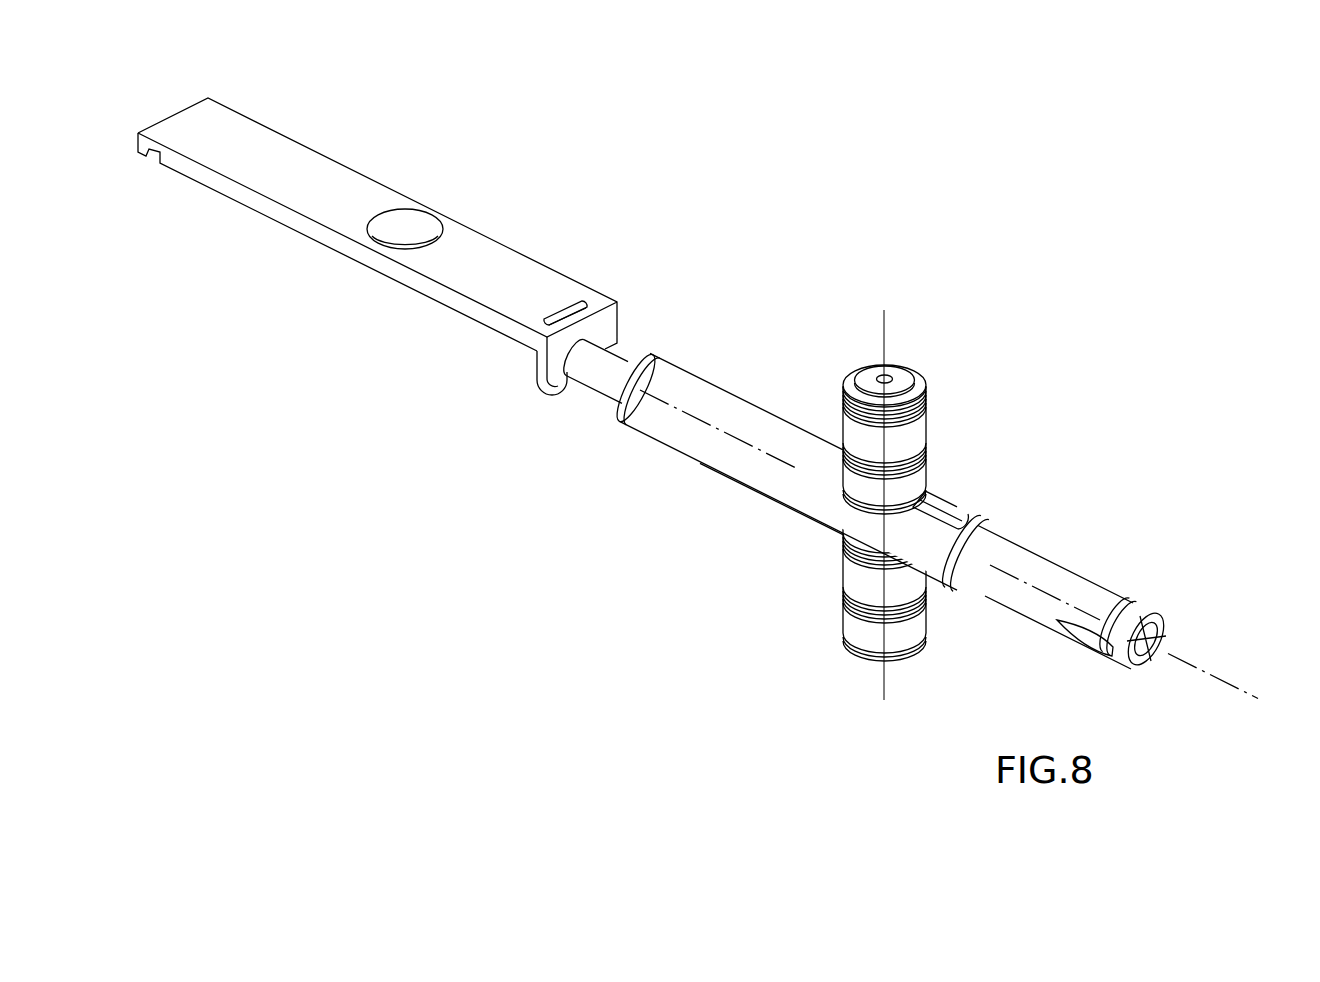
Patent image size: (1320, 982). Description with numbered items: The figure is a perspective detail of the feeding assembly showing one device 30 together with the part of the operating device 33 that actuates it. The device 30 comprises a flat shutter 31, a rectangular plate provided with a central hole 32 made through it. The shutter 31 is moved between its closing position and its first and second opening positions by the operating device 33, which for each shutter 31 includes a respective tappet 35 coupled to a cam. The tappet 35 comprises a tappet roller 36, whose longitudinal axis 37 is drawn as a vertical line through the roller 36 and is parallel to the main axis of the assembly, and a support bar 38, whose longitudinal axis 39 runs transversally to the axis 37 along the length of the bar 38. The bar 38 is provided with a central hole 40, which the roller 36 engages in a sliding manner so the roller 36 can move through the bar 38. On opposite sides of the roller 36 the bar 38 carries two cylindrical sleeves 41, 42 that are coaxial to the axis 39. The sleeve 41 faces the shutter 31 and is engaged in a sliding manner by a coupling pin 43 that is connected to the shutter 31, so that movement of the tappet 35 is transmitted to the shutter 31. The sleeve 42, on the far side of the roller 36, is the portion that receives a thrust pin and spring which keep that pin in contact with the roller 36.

The device 30 is at (377, 227).
The flat shutter 31 is at (260, 138).
The central hole 32 is at (405, 240).
The operating device 33 is at (886, 490).
The tappet 35 is at (886, 546).
The tappet roller 36 is at (918, 428).
The longitudinal axis 37 is at (882, 313).
The support bar 38 is at (787, 508).
The longitudinal axis 39 is at (1197, 674).
The central hole 40 is at (932, 497).
The cylindrical sleeve 41 is at (678, 442).
The cylindrical sleeve 42 is at (1012, 602).
The coupling pin 43 is at (597, 392).